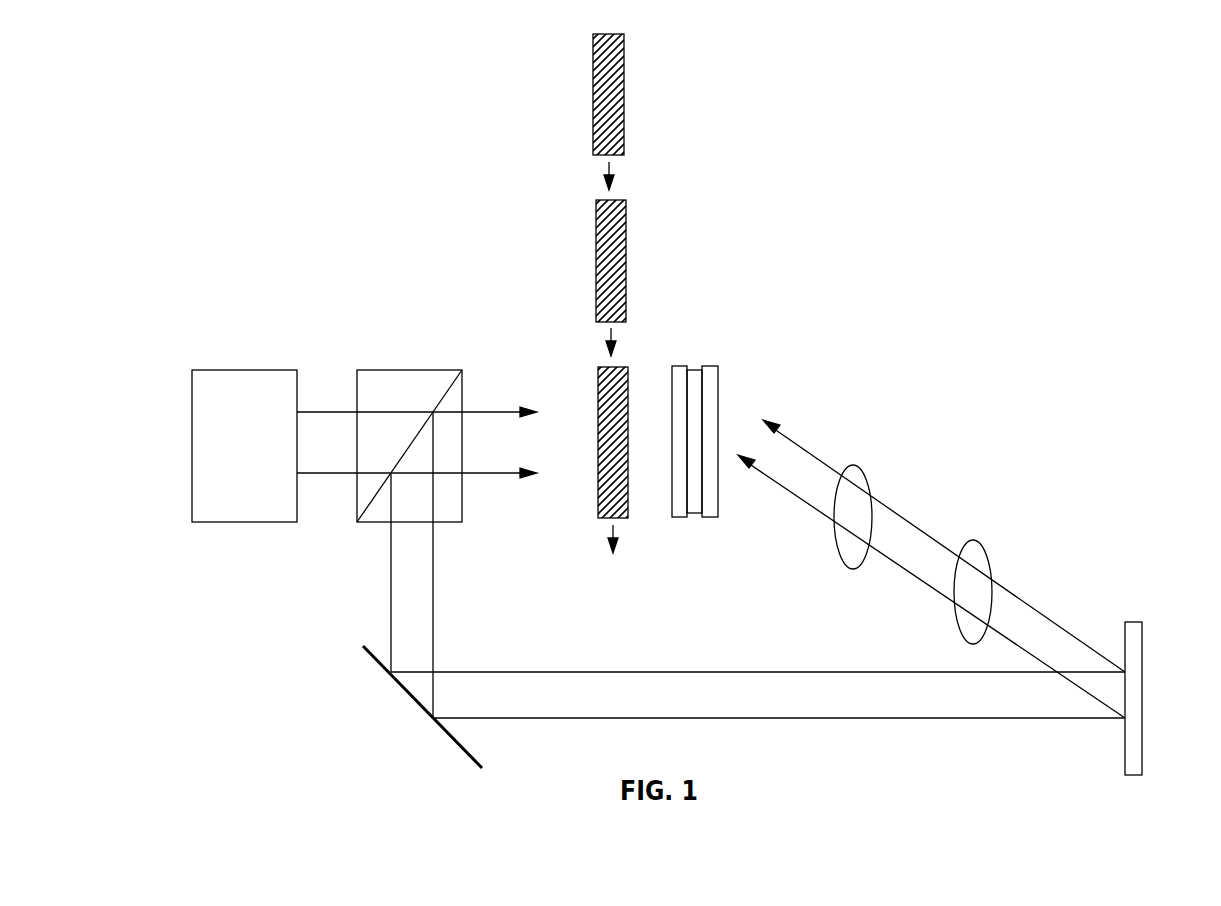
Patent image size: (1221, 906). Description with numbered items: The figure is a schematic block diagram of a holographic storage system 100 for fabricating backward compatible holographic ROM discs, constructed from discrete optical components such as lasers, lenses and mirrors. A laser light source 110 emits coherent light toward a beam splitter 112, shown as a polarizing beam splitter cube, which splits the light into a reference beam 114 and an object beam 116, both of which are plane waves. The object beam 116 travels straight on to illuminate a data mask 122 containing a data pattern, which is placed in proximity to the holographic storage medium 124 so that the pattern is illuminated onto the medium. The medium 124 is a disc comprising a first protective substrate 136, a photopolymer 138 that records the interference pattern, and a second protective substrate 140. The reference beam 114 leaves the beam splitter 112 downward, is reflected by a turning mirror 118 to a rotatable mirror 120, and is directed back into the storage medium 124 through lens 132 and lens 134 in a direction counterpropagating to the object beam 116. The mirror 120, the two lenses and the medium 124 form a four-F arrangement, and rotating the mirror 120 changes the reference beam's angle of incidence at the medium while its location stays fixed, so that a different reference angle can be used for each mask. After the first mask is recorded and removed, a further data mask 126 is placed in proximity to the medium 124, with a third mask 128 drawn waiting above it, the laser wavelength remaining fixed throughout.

The holographic storage system 100 is at (328, 193).
The laser light source 110 is at (270, 522).
The beam splitter 112 is at (383, 522).
The reference beam 114 is at (391, 596).
The object beam 116 is at (476, 411).
The turning mirror 118 is at (445, 737).
The rotatable mirror 120 is at (1143, 765).
The data mask 122 is at (603, 367).
The holographic storage medium 124 is at (729, 388).
The data mask 126 is at (597, 261).
The third plate 128 is at (593, 105).
The lens 132 is at (972, 541).
The lens 134 is at (861, 471).
The first protective substrate 136 is at (676, 364).
The photopolymer 138 is at (693, 368).
The second protective substrate 140 is at (717, 372).